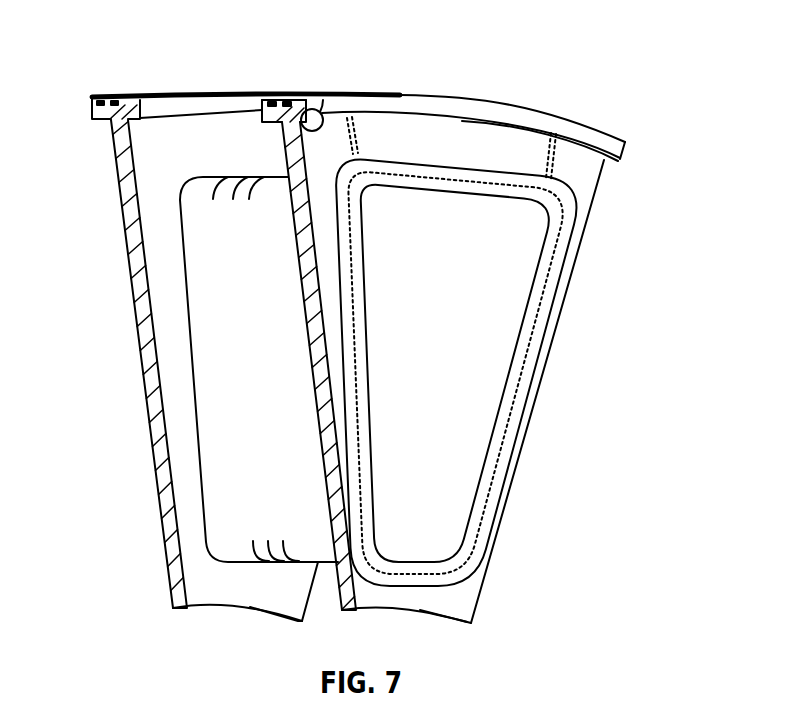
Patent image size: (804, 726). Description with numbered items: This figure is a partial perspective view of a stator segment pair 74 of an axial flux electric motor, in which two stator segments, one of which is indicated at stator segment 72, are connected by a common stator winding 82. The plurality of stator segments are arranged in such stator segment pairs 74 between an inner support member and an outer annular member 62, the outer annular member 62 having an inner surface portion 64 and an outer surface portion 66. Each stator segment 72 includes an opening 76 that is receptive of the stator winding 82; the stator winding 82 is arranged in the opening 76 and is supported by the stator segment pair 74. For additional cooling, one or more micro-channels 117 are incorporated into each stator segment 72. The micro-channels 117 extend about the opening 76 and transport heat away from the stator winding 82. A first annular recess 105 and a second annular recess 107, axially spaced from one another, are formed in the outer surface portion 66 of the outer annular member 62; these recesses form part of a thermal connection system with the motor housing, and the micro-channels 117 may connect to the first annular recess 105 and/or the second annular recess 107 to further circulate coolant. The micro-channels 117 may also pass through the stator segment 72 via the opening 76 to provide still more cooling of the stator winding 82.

The stator segment pair 74 is at (135, 64).
The first annular recess 105 is at (273, 100).
The inner surface portion 64 is at (302, 100).
The outer annular member 62 is at (330, 106).
The second annular recess 107 is at (390, 94).
The outer surface portion 66 is at (570, 120).
The stator segment 72 is at (577, 168).
The micro-channel 117 is at (543, 158).
The stator winding 82 is at (265, 460).
The opening 76 is at (505, 398).